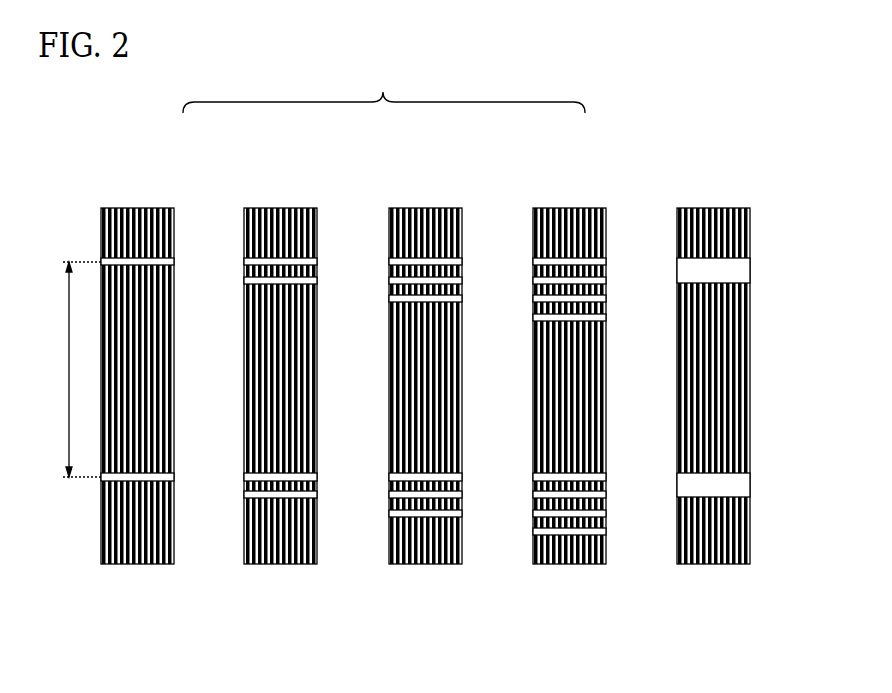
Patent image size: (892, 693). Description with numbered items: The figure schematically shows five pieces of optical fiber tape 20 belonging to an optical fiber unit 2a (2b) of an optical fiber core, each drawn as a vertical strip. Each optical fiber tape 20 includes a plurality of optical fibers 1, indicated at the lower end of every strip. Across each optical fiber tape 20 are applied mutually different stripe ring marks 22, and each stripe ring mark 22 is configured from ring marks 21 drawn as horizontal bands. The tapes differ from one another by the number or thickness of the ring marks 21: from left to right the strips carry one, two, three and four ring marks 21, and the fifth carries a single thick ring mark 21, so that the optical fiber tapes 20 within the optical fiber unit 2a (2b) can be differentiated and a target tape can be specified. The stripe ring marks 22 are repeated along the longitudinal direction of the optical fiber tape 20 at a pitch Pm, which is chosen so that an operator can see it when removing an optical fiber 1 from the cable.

The optical fiber 1 is at (102, 564).
The optical fiber tape 20 is at (425, 365).
The ring mark 21 is at (174, 477).
The stripe ring mark 22 is at (305, 620).
The optical fiber unit 2a is at (384, 88).
The optical fiber unit 2b is at (384, 88).
The pitch Pm is at (69, 369).